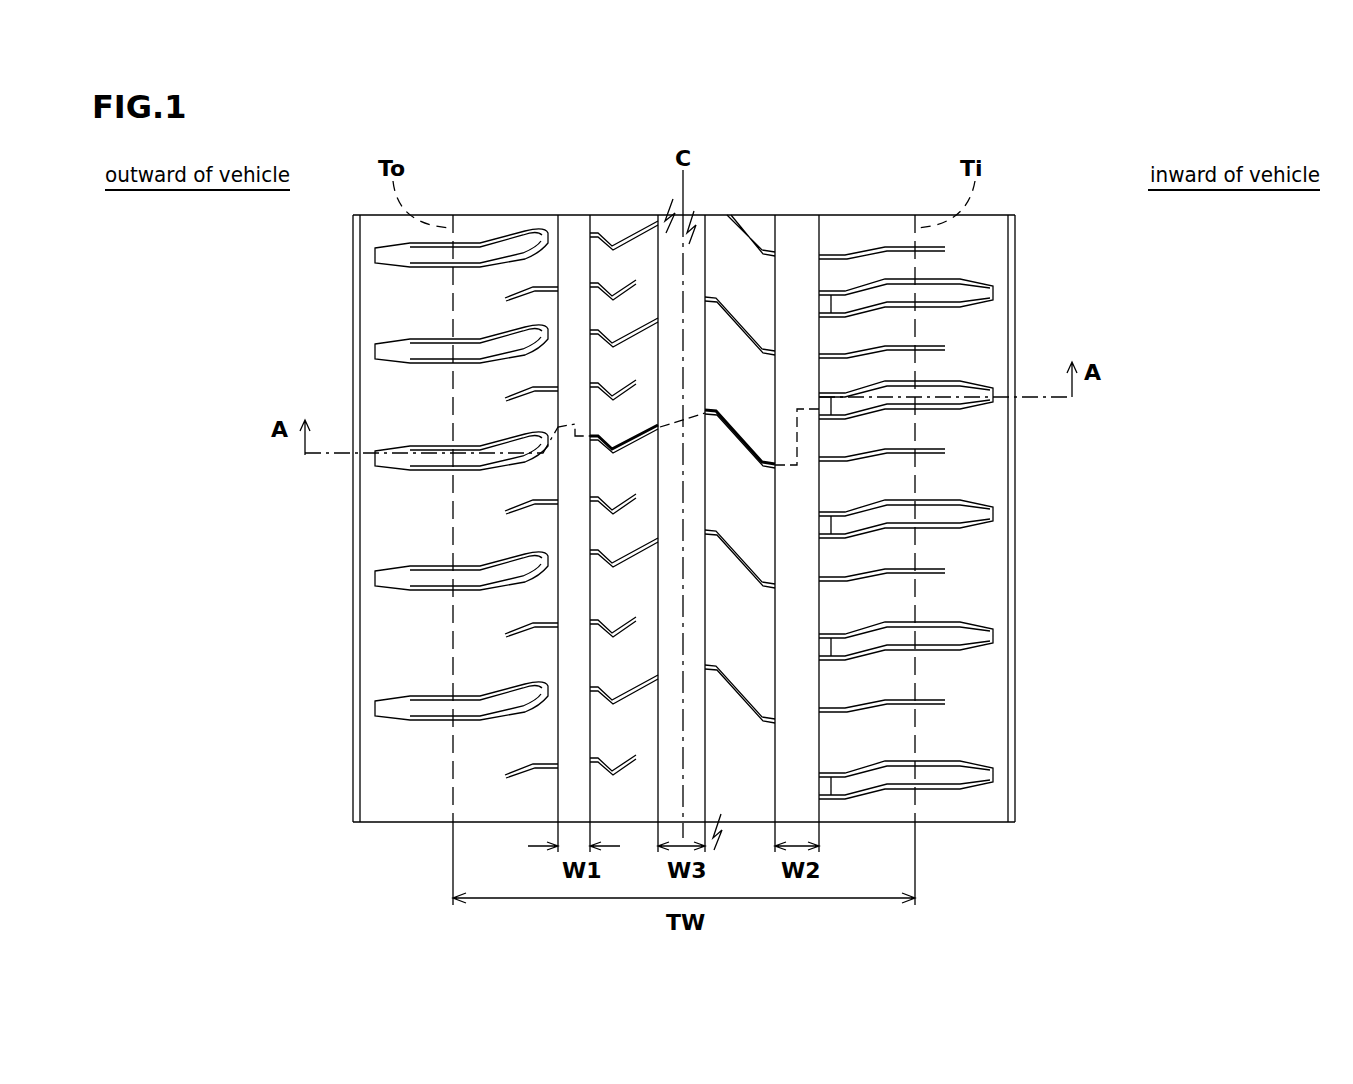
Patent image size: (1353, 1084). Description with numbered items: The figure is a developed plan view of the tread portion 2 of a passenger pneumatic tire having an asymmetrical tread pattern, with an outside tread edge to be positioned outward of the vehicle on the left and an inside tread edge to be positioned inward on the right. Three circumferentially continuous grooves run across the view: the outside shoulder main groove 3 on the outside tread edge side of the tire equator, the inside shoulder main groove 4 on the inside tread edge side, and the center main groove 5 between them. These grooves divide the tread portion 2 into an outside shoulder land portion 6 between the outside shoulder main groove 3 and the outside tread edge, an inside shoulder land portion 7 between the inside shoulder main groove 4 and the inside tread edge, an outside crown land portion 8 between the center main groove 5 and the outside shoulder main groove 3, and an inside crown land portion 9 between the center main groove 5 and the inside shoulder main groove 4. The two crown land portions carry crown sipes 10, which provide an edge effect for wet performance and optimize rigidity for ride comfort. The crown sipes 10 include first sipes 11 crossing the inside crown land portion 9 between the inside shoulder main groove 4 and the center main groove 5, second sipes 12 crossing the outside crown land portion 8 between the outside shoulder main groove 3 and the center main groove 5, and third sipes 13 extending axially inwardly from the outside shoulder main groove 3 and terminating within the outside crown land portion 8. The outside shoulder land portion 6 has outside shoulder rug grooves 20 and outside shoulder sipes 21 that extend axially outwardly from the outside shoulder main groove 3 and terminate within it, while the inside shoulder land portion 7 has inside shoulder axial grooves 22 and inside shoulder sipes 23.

The tread portion 2 is at (1087, 163).
The outside shoulder main groove 3 is at (578, 236).
The inside shoulder main groove 4 is at (806, 231).
The center main groove 5 is at (699, 230).
The outside shoulder land portion 6 is at (379, 503).
The inside shoulder land portion 7 is at (984, 523).
The outside crown land portion 8 is at (638, 251).
The inside crown land portion 9 is at (734, 261).
The crown sipes 10 is at (684, 501).
The first sipes 11 is at (740, 445).
The second sipes 12 is at (640, 443).
The third sipes 13 is at (628, 505).
The outside shoulder rug grooves 20 is at (480, 578).
The outside shoulder sipes 21 is at (534, 617).
The inside shoulder axial grooves 22 is at (897, 393).
The inside shoulder sipes 23 is at (905, 452).